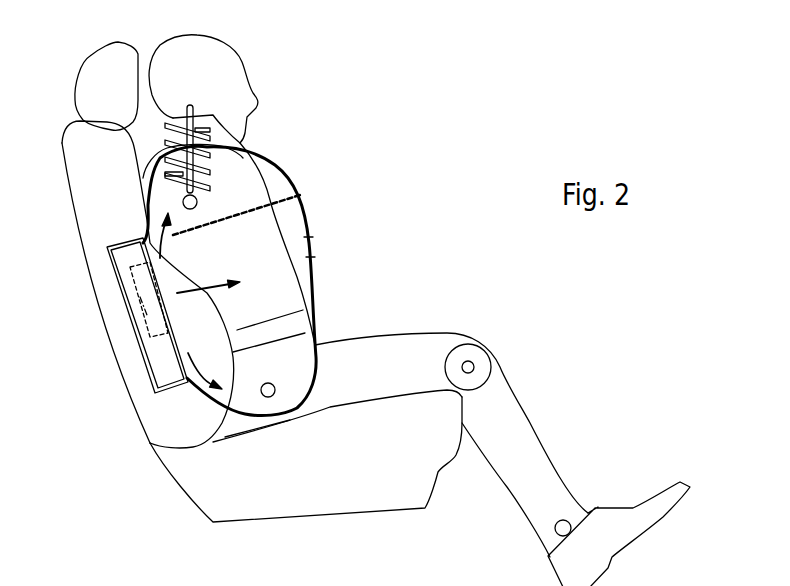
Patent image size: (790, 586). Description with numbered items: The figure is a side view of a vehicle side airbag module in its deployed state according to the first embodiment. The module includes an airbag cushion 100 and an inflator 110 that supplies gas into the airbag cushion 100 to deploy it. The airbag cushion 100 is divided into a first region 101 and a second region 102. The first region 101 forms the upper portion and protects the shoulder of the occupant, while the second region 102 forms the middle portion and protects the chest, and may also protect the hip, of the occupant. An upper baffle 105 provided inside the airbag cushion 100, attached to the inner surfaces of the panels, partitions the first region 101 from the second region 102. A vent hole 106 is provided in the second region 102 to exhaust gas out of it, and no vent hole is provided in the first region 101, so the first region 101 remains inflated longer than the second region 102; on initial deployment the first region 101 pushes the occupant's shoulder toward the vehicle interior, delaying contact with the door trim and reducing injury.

The airbag cushion 100 is at (236, 266).
The first region 101 is at (265, 177).
The second region 102 is at (265, 228).
The upper baffle 105 is at (235, 152).
The vent hole 106 is at (315, 247).
The inflator 110 is at (148, 322).